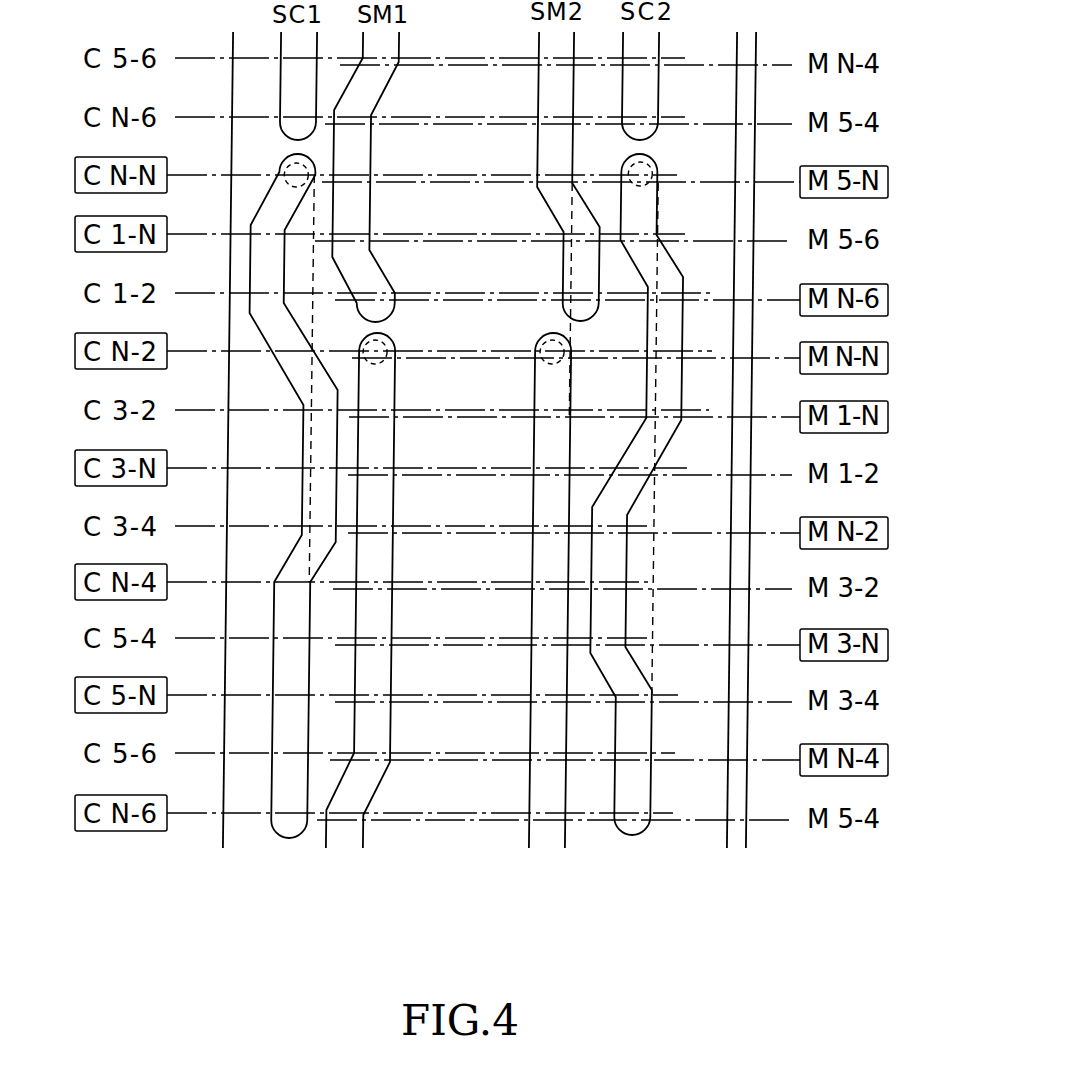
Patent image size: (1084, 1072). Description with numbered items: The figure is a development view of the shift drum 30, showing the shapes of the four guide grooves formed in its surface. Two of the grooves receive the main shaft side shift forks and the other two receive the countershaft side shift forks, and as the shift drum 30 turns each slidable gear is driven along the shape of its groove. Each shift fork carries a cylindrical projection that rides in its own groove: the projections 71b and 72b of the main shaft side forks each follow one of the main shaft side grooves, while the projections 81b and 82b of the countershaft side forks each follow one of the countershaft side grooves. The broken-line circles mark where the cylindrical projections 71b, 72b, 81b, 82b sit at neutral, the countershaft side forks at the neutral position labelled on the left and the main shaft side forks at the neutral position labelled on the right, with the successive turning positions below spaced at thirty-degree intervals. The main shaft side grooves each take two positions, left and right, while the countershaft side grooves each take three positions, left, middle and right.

The shift drum 30 is at (471, 808).
The cylindrical projection 71b is at (382, 344).
The cylindrical projection 72b is at (546, 340).
The cylindrical projection 81b is at (305, 171).
The cylindrical projection 82b is at (644, 164).